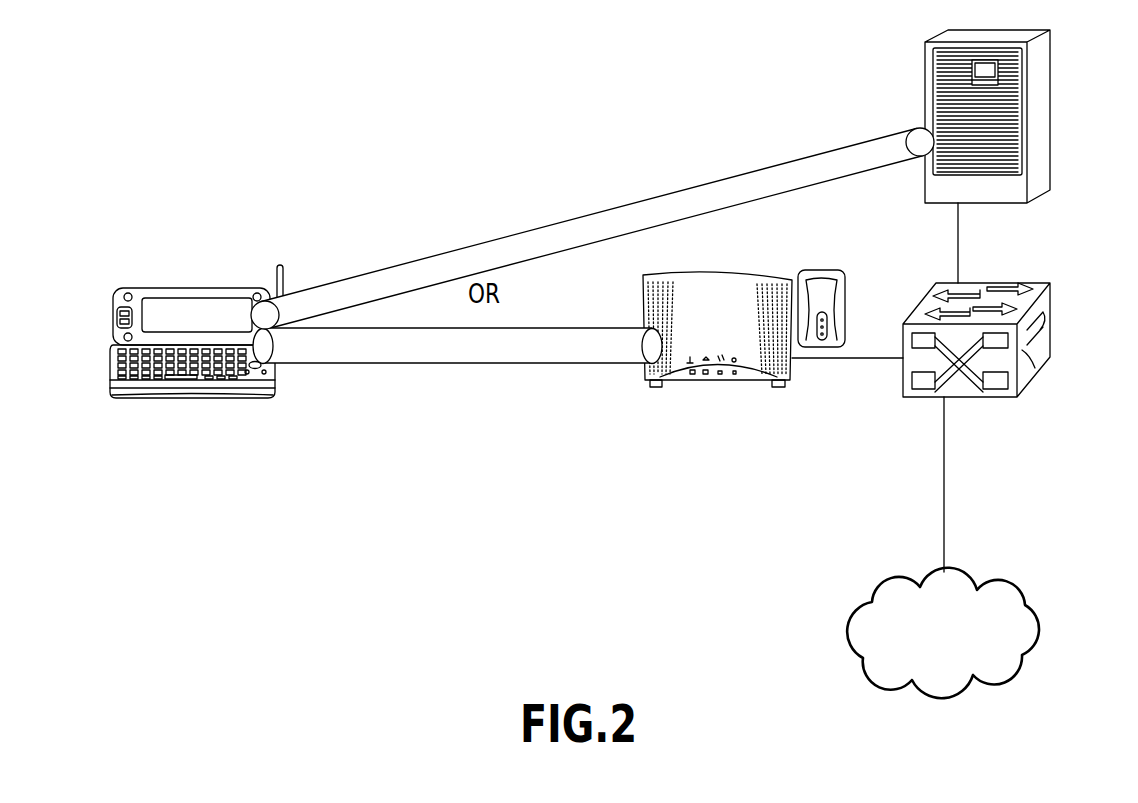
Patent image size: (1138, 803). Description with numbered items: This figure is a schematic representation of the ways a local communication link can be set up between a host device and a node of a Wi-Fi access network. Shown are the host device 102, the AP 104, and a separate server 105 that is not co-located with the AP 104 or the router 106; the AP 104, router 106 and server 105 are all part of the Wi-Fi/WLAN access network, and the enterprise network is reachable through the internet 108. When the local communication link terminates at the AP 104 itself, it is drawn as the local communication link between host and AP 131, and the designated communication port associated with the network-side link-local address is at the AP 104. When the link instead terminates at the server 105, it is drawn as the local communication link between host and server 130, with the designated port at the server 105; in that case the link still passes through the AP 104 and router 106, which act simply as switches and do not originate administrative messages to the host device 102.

The host device 102 is at (112, 358).
The AP 104 is at (640, 300).
The server 105 is at (1050, 95).
The router 106 is at (1050, 318).
The internet 108 is at (1008, 573).
The local communication link between host and server 130 is at (630, 203).
The local communication link between host and AP 131 is at (413, 363).